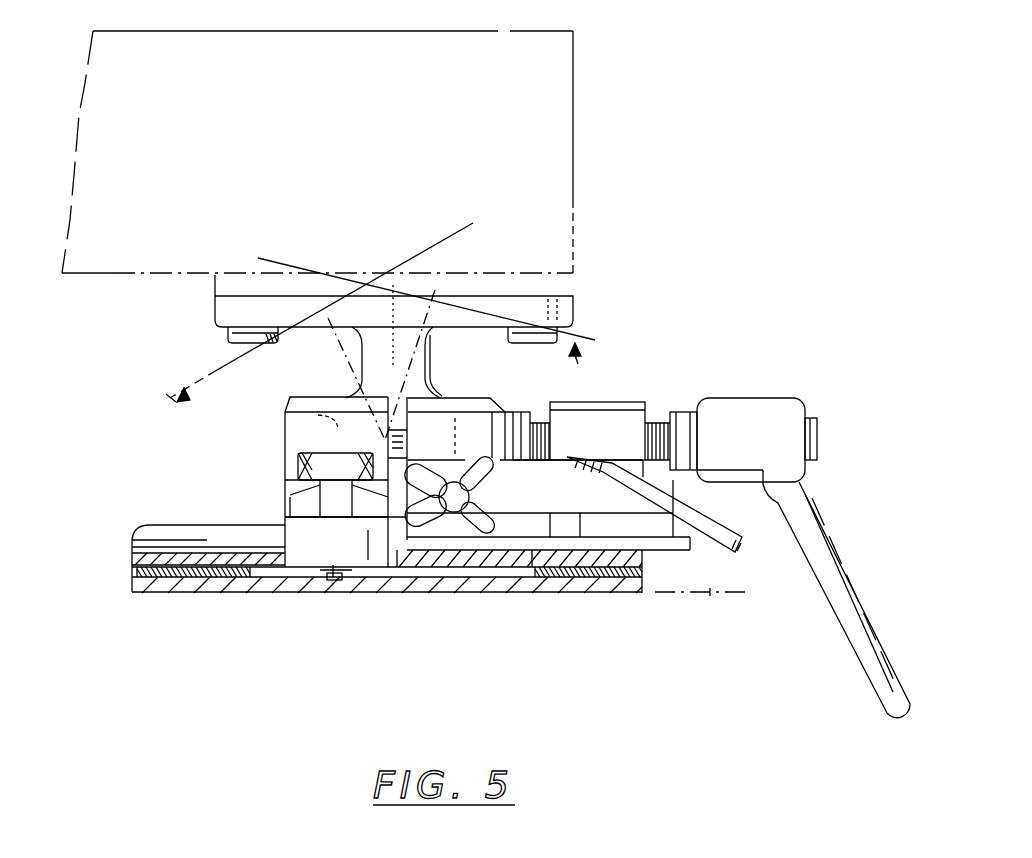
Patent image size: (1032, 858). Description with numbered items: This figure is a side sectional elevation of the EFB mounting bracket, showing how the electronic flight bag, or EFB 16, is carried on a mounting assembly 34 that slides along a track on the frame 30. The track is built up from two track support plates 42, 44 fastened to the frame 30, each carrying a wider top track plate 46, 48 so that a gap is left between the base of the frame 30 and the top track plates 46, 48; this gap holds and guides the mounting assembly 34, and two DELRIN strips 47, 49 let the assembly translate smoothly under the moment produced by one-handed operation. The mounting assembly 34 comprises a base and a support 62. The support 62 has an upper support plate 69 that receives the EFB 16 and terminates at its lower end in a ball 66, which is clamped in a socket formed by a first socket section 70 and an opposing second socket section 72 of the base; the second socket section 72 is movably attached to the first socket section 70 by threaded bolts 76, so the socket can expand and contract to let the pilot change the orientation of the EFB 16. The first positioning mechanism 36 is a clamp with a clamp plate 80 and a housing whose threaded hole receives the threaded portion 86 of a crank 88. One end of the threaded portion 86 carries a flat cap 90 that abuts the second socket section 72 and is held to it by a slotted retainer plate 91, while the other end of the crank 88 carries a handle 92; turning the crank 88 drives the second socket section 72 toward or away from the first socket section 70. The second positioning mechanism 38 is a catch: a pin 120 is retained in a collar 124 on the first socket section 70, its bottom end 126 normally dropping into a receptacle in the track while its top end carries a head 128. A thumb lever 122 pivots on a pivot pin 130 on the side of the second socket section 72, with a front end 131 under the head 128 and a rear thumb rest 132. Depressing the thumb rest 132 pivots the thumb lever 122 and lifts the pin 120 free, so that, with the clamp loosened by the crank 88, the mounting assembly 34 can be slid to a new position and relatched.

The EFB 16 is at (573, 150).
The support 62 is at (582, 295).
The upper support plate 69 is at (243, 298).
The ball 66 is at (432, 392).
The mounting assembly 34 is at (330, 386).
The first socket section 70 is at (296, 399).
The head 128 is at (316, 460).
The pin 120 is at (318, 448).
The front end 131 is at (292, 465).
The collar 124 is at (300, 530).
The bolts 76 is at (395, 455).
The second socket section 72 is at (513, 372).
The cap 90 is at (523, 423).
The crank 88 is at (632, 448).
The threaded portion 86 is at (668, 420).
The first positioning mechanism 36 is at (790, 345).
The handle 92 is at (862, 584).
The thumb lever 122 is at (598, 504).
The thumb rest 132 is at (728, 537).
The clamp plate 80 is at (692, 551).
The pivot pin 130 is at (458, 508).
The frame 30 is at (148, 521).
The top track plate 46 is at (135, 560).
The track support plate 42 is at (140, 572).
The track support plate 44 is at (578, 592).
The top track plate 48 is at (643, 556).
The bottom end 126 is at (312, 578).
The second positioning mechanism 38 is at (305, 559).
The slotted retainer plate 91 is at (532, 592).
The DELRIN strip 47 is at (240, 592).
The DELRIN strip 49 is at (563, 597).